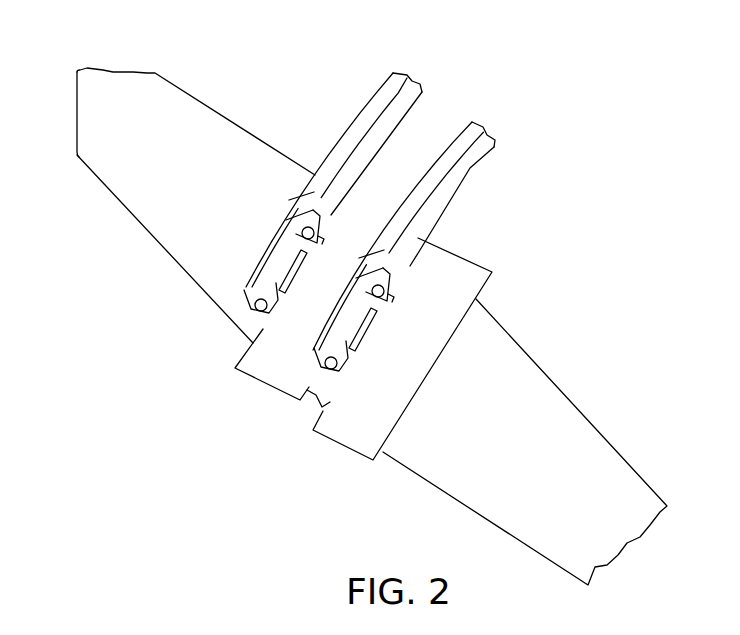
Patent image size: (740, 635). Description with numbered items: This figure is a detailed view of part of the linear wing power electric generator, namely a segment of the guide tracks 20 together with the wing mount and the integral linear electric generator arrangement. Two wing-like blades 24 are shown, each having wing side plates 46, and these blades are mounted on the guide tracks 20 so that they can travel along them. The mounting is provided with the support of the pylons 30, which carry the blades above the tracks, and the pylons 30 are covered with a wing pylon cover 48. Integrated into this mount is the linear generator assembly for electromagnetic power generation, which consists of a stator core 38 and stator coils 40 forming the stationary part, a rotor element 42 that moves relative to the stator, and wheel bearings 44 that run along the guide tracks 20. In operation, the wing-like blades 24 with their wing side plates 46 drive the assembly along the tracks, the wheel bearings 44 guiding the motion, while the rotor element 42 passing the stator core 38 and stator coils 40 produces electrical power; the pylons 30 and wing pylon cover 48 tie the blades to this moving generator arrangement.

The guide tracks 20 is at (473, 171).
The wing-like blades 24 is at (123, 210).
The pylons 30 is at (262, 386).
The stator core 38 is at (257, 275).
The stator coils 40 is at (261, 298).
The rotor element 42 is at (353, 315).
The wheel bearings 44 is at (395, 290).
The wing side plates 46 is at (76, 107).
The wing pylon cover 48 is at (313, 400).